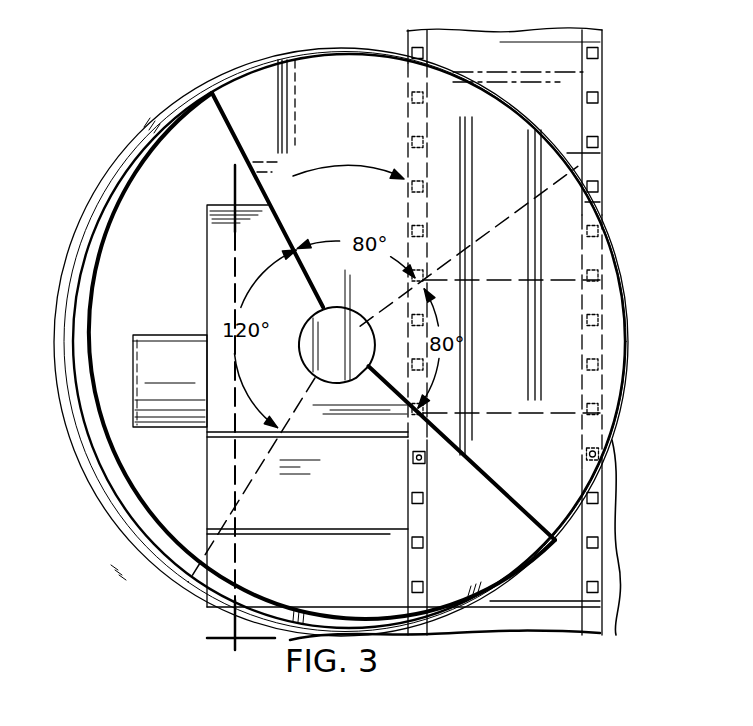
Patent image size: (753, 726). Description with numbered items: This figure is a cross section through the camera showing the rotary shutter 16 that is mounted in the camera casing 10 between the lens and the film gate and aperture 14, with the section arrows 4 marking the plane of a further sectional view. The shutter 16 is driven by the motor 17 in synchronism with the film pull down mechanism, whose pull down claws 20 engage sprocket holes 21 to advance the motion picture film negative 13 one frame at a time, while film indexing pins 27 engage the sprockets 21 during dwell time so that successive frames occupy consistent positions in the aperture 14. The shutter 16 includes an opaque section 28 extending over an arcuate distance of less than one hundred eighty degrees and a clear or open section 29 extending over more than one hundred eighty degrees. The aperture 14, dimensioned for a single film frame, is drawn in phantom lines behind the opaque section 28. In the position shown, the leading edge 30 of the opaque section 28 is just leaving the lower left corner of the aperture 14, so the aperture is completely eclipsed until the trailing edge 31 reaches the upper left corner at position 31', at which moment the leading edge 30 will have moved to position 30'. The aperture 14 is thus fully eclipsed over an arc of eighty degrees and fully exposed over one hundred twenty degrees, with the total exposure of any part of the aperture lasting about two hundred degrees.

The camera casing 10 is at (207, 502).
The motion picture film negative 13 is at (600, 602).
The film gate and aperture 14 is at (482, 280).
The shutter 16 is at (240, 66).
The motor 17 is at (150, 335).
The pull down claws 20 is at (588, 543).
The sprocket holes 21 is at (588, 588).
The film indexing pins 27 is at (608, 463).
The opaque section 28 is at (497, 131).
The clear or open section 29 is at (136, 450).
The leading edge 30 is at (462, 453).
The position of leading edge 30' is at (252, 480).
The trailing edge 31 is at (250, 200).
The position of trailing edge 31' is at (469, 246).
The section line 4- 4 is at (218, 190).